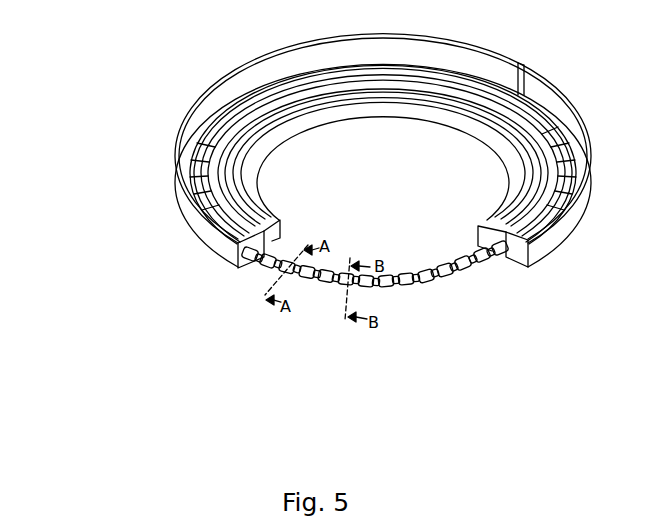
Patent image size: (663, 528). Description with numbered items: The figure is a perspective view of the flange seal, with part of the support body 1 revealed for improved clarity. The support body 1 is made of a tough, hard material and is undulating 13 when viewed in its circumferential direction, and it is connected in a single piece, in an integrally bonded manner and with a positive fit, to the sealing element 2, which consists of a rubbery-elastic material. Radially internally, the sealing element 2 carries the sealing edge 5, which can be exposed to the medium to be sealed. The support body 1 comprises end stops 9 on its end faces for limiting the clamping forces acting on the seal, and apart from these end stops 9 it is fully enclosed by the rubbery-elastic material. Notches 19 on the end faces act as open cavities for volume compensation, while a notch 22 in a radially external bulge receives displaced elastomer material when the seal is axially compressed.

The support body 1 is at (386, 289).
The undulating 13 is at (447, 277).
The sealing element 2 is at (508, 182).
The sealing edge 5 is at (470, 230).
The end stop 9 is at (547, 123).
The notch 19 is at (200, 172).
The notch 22 is at (205, 214).